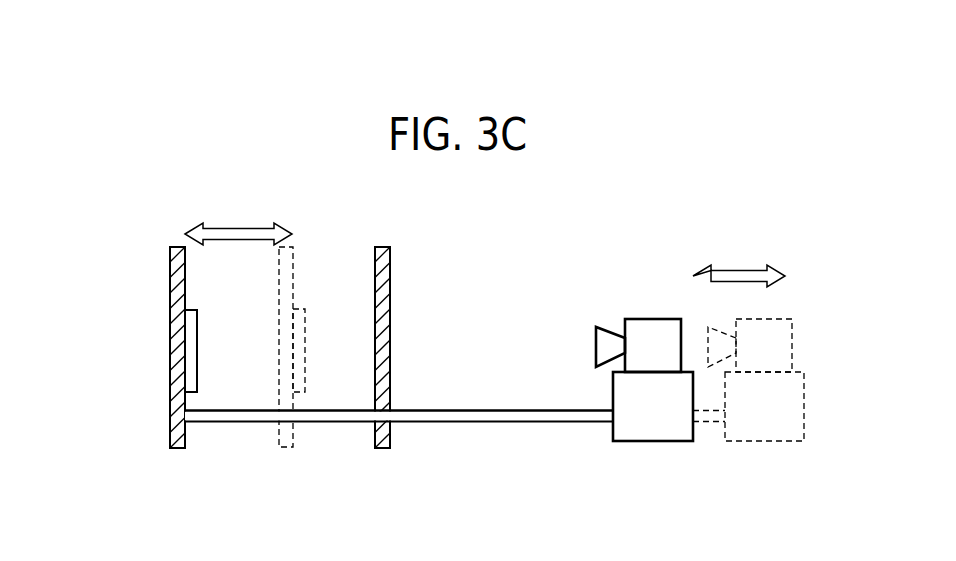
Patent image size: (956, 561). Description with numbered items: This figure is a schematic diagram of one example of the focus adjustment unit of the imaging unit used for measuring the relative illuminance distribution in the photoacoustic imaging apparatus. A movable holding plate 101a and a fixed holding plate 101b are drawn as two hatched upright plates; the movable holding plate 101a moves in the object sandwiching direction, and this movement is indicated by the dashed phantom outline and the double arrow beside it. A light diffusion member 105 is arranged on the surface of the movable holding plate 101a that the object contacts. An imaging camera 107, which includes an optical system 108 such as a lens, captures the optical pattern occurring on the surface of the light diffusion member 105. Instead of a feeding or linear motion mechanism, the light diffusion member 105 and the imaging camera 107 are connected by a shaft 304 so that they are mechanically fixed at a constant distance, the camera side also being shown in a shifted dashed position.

The movable holding plate 101a is at (170, 352).
The fixed holding plate 101b is at (390, 273).
The light diffusion member 105 is at (197, 350).
The imaging camera 107 is at (652, 319).
The optical system 108 is at (603, 327).
The shaft 304 is at (495, 410).